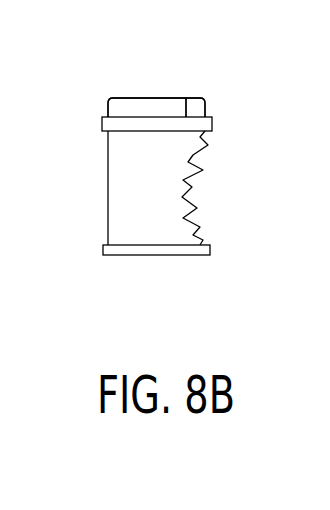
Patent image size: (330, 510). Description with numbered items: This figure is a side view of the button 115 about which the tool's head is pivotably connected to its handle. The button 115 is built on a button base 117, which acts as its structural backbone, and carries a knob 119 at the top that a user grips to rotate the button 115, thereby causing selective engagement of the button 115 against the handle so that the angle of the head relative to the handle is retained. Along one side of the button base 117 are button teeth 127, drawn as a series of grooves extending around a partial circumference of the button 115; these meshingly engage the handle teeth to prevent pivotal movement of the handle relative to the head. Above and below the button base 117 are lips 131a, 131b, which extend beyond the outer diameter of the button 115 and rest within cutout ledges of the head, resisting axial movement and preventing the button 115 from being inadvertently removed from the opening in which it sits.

The button 115 is at (90, 107).
The knob 119 is at (167, 107).
The lip 131a is at (211, 123).
The button base 117 is at (122, 198).
The button teeth 127 is at (180, 187).
The lip 131b is at (102, 249).